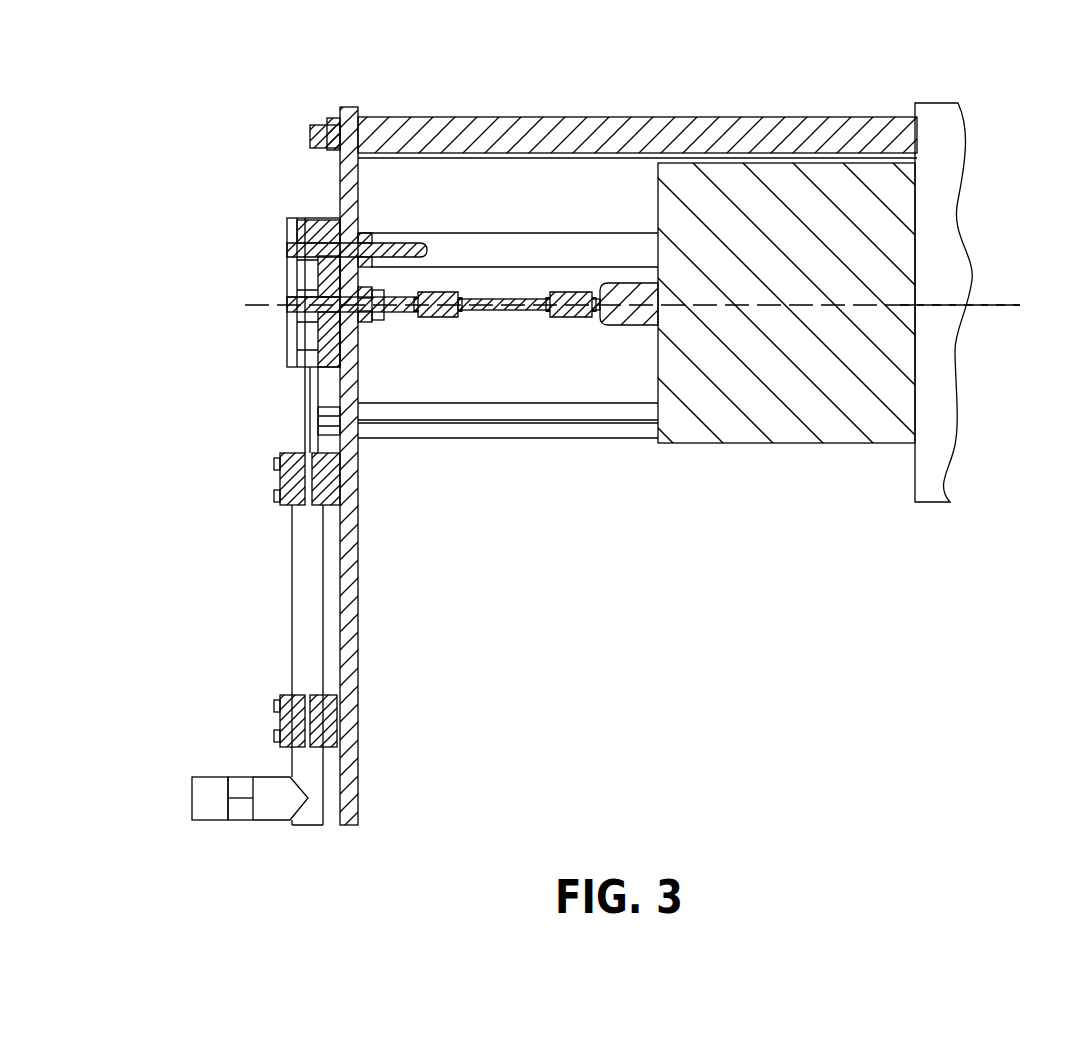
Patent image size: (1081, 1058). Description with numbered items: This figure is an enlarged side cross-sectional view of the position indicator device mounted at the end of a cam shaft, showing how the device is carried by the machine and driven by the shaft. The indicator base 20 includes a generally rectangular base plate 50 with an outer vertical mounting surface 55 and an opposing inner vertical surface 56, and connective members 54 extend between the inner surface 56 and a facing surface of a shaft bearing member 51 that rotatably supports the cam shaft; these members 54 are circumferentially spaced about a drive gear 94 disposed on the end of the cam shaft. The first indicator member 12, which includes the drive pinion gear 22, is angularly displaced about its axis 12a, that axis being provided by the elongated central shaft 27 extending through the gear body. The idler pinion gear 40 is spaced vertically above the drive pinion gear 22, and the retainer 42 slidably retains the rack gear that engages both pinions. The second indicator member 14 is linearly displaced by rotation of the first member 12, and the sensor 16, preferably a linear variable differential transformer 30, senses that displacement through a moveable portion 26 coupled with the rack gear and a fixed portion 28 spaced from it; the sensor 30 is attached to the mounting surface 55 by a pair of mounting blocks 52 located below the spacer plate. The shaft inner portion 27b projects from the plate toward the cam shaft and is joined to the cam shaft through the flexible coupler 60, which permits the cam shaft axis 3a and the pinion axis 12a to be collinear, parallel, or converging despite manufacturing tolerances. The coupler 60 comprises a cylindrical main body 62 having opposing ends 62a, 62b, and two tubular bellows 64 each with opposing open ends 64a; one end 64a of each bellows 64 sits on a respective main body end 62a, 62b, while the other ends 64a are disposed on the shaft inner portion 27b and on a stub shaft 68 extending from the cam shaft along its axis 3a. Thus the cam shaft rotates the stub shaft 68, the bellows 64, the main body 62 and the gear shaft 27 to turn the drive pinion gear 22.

The central axis 3a is at (1002, 305).
The first indicator member 12 is at (277, 287).
The first member axis 12a is at (260, 305).
The second indicator member 14 is at (257, 378).
The sensor 16 is at (244, 600).
The indicator base 20 is at (380, 698).
The drive pinion gear 22 is at (289, 318).
The sensor moveable portion 26 is at (316, 430).
The central shaft 27 is at (393, 330).
The shaft inner portion 27b is at (382, 300).
The sensor fixed portion 28 is at (315, 617).
The linear variable differential transformer 30 is at (284, 655).
The idler pinion gear 40 is at (291, 227).
The retainer 42 is at (287, 236).
The base plate 50 is at (359, 765).
The shaft bearing member 51 is at (953, 262).
The mounting blocks 52 is at (300, 483).
The connective members 54 is at (598, 118).
The mounting surface 55 is at (340, 180).
The inner vertical surface 56 is at (357, 392).
The flexible coupler 60 is at (504, 380).
The coupler main body 62 is at (521, 292).
The main body end 62a is at (556, 298).
The main body end 62b is at (461, 300).
The bellows 64 is at (442, 289).
The bellows open ends 64a is at (413, 317).
The stub shaft 68 is at (627, 290).
The drive gear 94 is at (800, 448).